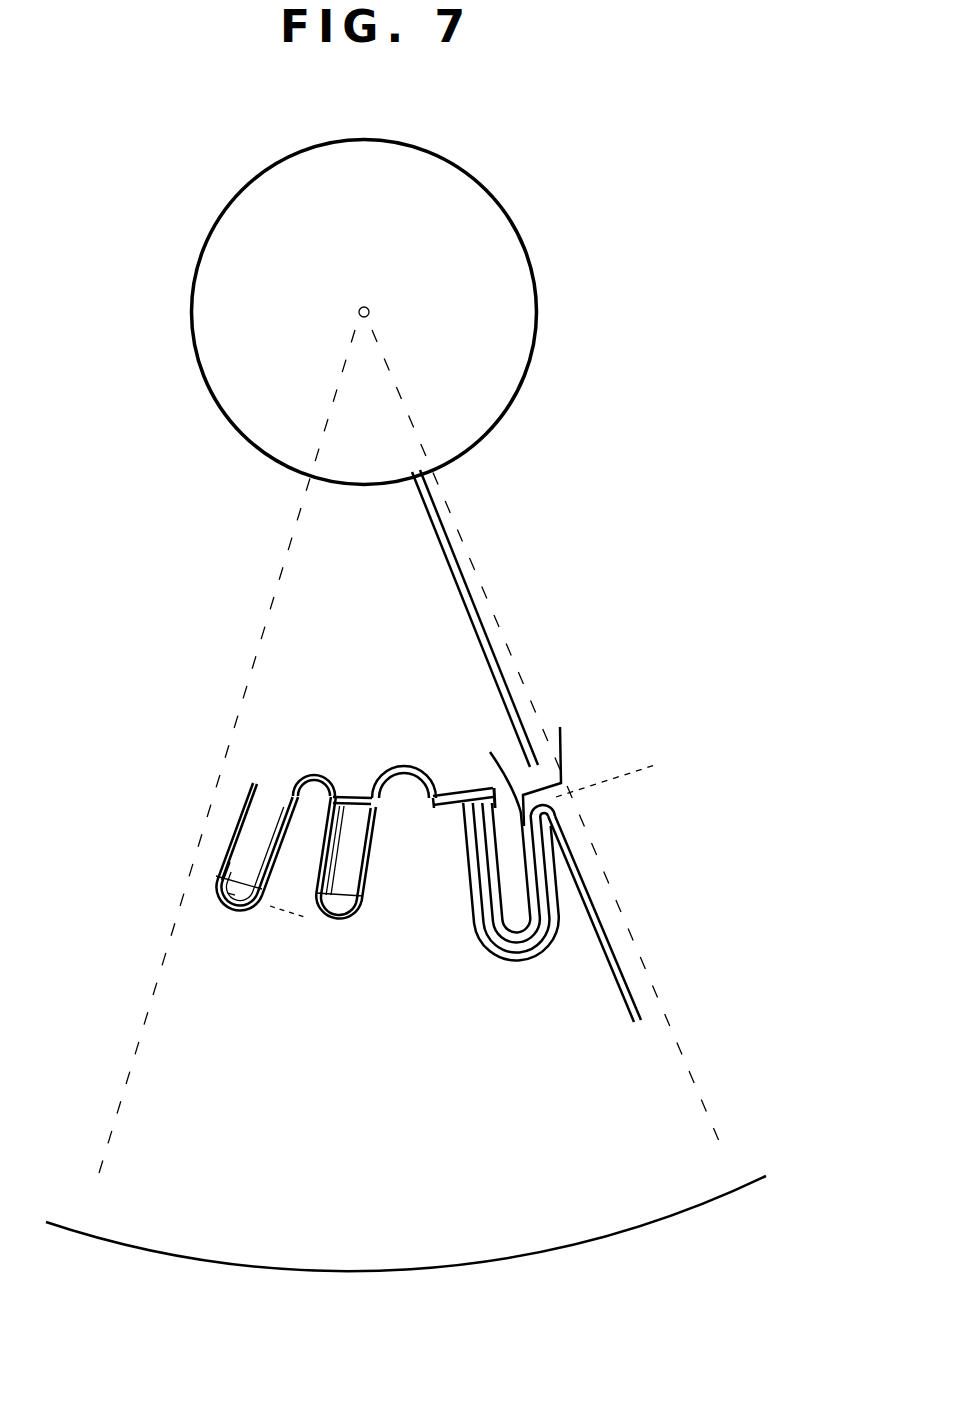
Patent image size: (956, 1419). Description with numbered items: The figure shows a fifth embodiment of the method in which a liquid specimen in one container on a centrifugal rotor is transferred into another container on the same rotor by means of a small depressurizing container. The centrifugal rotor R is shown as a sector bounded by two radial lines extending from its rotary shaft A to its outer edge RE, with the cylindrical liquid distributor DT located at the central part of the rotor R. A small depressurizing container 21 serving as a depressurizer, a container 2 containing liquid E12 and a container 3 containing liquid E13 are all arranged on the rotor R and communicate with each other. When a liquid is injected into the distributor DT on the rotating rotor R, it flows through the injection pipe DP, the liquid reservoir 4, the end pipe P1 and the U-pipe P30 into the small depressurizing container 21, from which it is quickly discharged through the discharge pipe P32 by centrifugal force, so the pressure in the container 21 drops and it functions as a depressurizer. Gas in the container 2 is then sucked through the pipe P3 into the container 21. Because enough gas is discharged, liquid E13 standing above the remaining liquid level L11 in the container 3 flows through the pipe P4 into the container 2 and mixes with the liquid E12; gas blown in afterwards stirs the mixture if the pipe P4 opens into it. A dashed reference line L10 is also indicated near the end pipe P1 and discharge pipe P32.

The liquid distributor DT is at (224, 416).
The rotary shaft A is at (372, 313).
The centrifugal rotor R is at (382, 605).
The outer edge RE is at (637, 1232).
The injection pipe DP is at (445, 537).
The liquid reservoir 4 is at (553, 737).
The reference line L10 is at (655, 762).
The container 3 is at (225, 917).
The liquid E13 is at (210, 887).
The remaining liquid level L11 is at (268, 905).
The pipe P4 is at (315, 772).
The container 2 is at (334, 925).
The liquid E12 is at (350, 910).
The pipe P3 is at (403, 764).
The small depressurizing container 21 is at (450, 812).
The U-pipe P30 is at (518, 950).
The end pipe P1 is at (527, 823).
The discharge pipe P32 is at (538, 962).